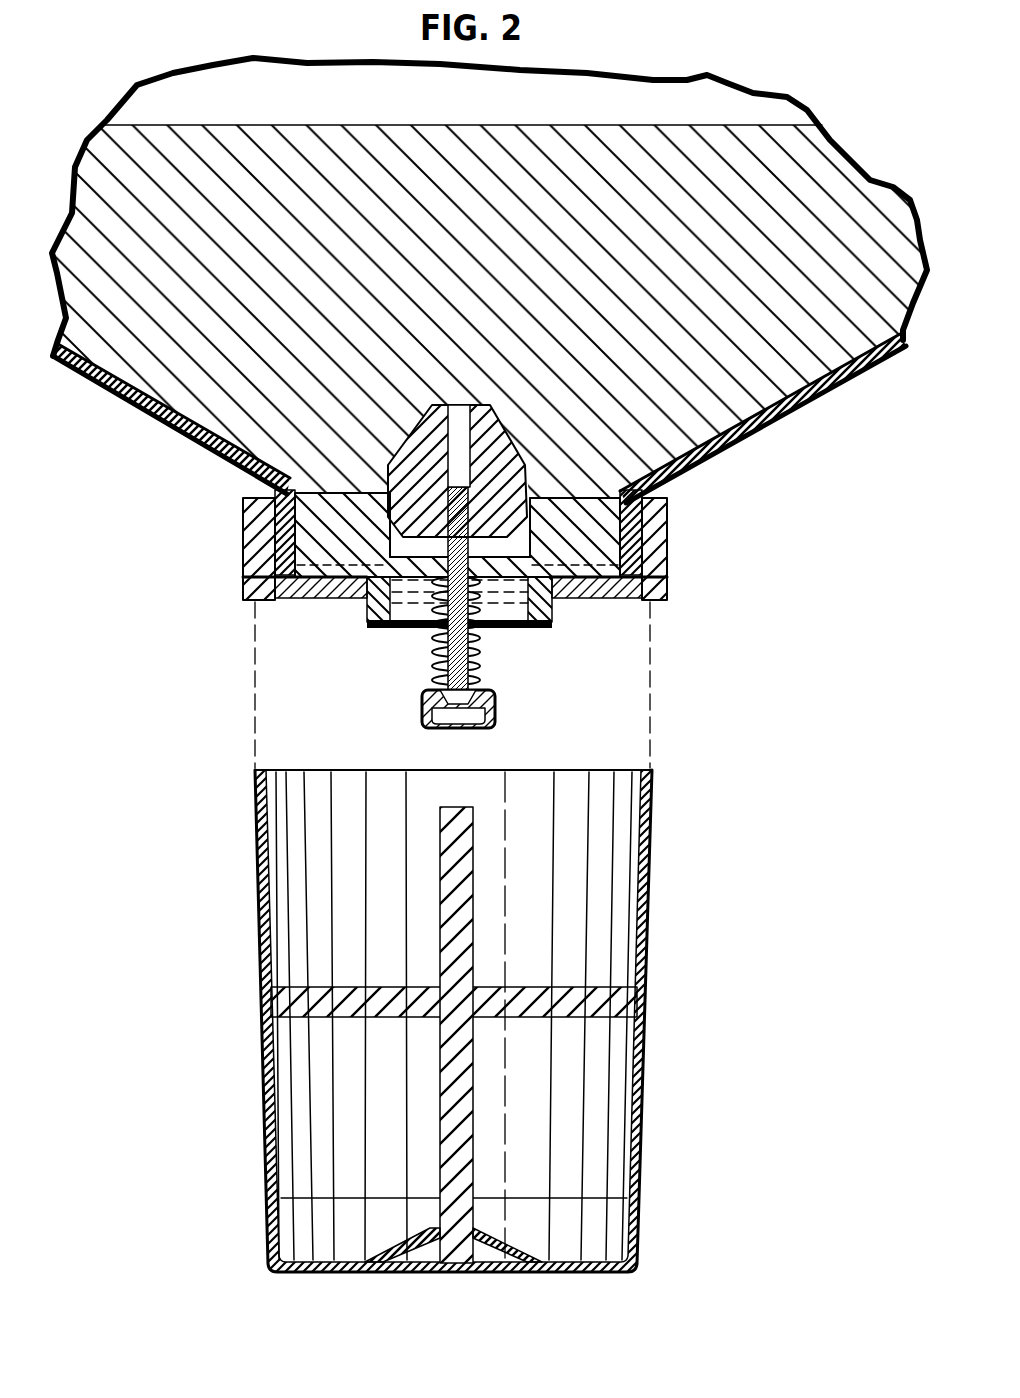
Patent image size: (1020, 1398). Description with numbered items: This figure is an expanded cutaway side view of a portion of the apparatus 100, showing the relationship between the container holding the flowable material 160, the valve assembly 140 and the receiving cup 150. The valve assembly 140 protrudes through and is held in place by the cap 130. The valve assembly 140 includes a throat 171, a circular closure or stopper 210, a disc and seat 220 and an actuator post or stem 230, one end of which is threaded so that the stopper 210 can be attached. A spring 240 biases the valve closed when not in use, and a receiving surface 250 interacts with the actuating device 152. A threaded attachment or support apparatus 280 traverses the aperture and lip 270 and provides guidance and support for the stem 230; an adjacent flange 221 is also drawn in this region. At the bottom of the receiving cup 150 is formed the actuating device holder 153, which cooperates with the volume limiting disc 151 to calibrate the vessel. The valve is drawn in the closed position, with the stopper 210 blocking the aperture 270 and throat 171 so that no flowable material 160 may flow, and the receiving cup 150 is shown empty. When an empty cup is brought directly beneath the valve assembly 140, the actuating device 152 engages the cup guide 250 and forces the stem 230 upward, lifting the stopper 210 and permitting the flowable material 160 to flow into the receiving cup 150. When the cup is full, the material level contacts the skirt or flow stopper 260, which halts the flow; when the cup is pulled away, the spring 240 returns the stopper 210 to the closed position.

The apparatus 100 is at (88, 78).
The flowable material 160 is at (460, 152).
The cap 130 is at (665, 587).
The throat 171 is at (521, 539).
The skirt or flow stopper 260 is at (364, 622).
The threaded attachment or support apparatus 280 is at (552, 606).
The disc and seat 220 is at (262, 562).
The aperture and lip 270 is at (250, 601).
The skin flange 221 is at (530, 490).
The actuator post or stem 230 is at (423, 627).
The spring 240 is at (478, 640).
The valve assembly 140 is at (433, 663).
The stopper 210 is at (428, 418).
The receiving surface 250 is at (496, 712).
The receiving cup 150 is at (645, 1120).
The volume limiting disc 151 is at (523, 987).
The actuating device 152 is at (473, 807).
The actuating device holder 153 is at (467, 1274).